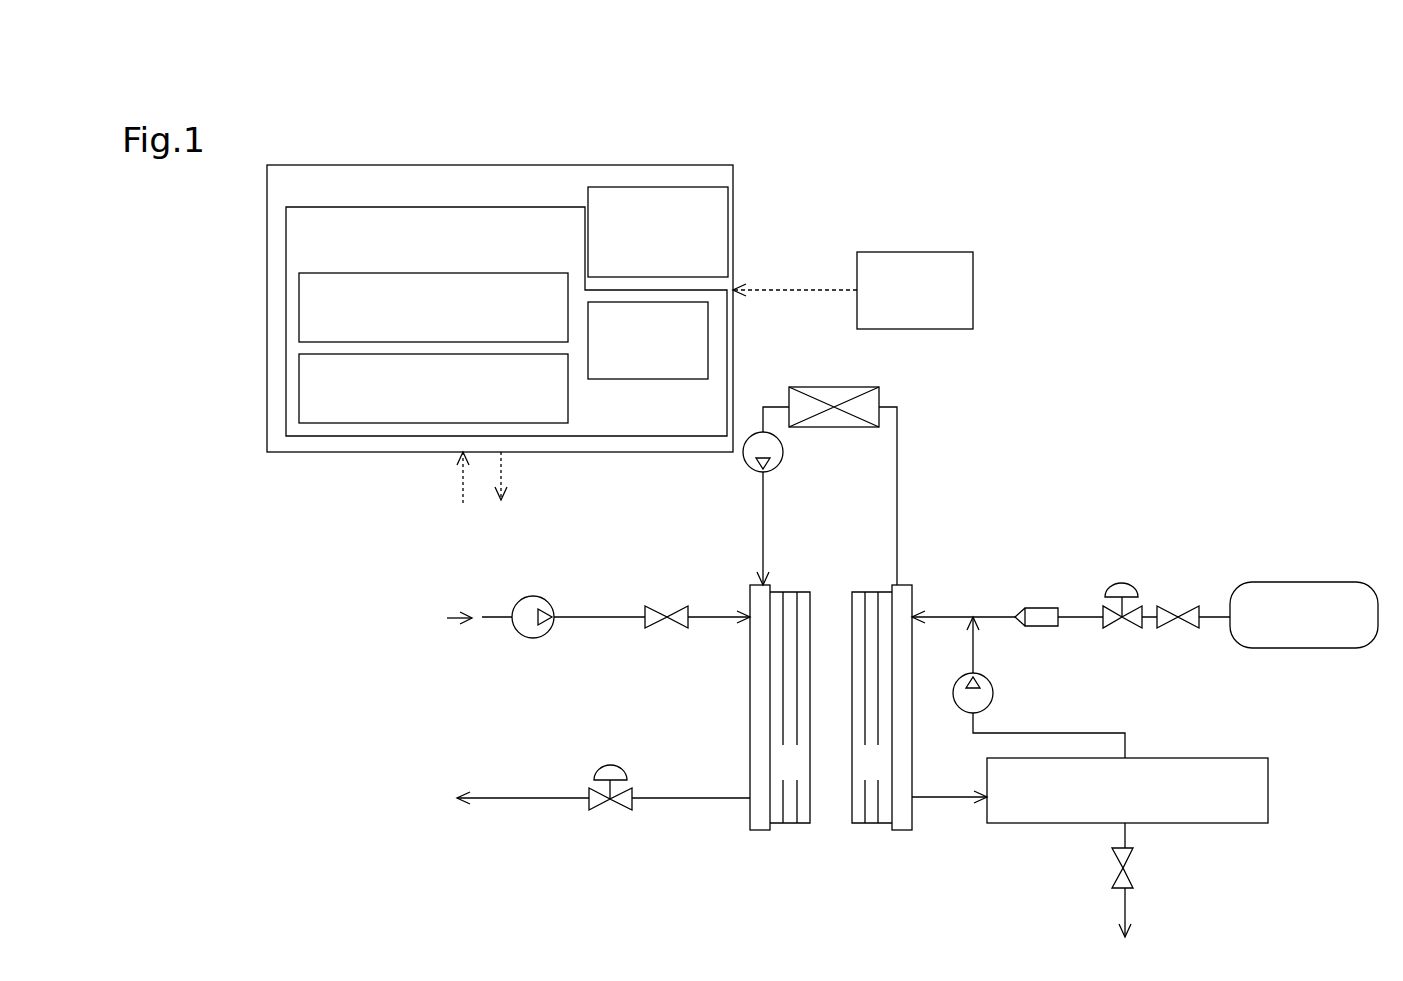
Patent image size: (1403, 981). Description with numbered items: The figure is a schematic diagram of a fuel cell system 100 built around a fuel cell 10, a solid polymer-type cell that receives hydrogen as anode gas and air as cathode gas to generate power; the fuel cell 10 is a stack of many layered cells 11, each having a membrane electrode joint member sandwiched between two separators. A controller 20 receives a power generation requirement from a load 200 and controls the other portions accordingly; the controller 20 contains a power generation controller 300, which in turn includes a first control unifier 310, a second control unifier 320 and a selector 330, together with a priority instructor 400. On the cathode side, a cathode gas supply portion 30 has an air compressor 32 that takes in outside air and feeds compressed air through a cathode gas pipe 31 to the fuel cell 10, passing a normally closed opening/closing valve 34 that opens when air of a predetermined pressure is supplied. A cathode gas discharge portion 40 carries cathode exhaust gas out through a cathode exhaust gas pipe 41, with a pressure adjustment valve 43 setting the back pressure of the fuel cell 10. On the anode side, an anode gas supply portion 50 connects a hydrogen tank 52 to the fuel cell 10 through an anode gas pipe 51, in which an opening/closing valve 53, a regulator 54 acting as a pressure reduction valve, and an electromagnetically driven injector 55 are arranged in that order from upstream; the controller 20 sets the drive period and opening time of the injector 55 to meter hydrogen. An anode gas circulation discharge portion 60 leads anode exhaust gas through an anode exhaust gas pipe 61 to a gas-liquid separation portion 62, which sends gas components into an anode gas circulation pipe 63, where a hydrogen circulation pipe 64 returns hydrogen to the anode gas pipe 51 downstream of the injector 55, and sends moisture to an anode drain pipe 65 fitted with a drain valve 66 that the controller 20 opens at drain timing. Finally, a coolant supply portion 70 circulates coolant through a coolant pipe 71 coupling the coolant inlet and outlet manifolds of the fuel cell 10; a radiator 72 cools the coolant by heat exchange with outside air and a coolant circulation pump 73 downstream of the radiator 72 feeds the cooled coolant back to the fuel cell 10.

The fuel cell system 100 is at (1200, 270).
The fuel cell 10 is at (819, 734).
The cells 11 is at (792, 825).
The controller 20 is at (267, 200).
The power generation controller 300 is at (286, 248).
The first control unifier 310 is at (299, 313).
The second control unifier 320 is at (299, 388).
The selector 330 is at (708, 341).
The priority instructor 400 is at (733, 240).
The load 200 is at (943, 252).
The cathode gas supply portion 30 is at (422, 548).
The cathode gas pipe 31 is at (610, 617).
The air compressor 32 is at (543, 597).
The opening/closing valve 34 is at (660, 605).
The cathode gas discharge portion 40 is at (553, 842).
The cathode exhaust gas pipe 41 is at (508, 797).
The pressure adjustment valve 43 is at (603, 763).
The anode gas supply portion 50 is at (1142, 520).
The anode gas pipe 51 is at (998, 615).
The hydrogen tank 52 is at (1288, 582).
The opening/closing valve 53 is at (1170, 612).
The regulator 54 is at (1118, 582).
The injector 55 is at (1045, 626).
The anode gas circulation discharge portion 60 is at (1280, 770).
The anode exhaust gas pipe 61 is at (945, 800).
The gas-liquid separation portion 62 is at (1175, 758).
The anode gas circulation pipe 63 is at (1000, 730).
The hydrogen circulation pipe 64 is at (990, 682).
The anode drain pipe 65 is at (1127, 903).
The drain valve 66 is at (1130, 870).
The coolant supply portion 70 is at (887, 365).
The coolant pipe 71 is at (897, 440).
The radiator 72 is at (818, 387).
The coolant circulation pump 73 is at (748, 472).